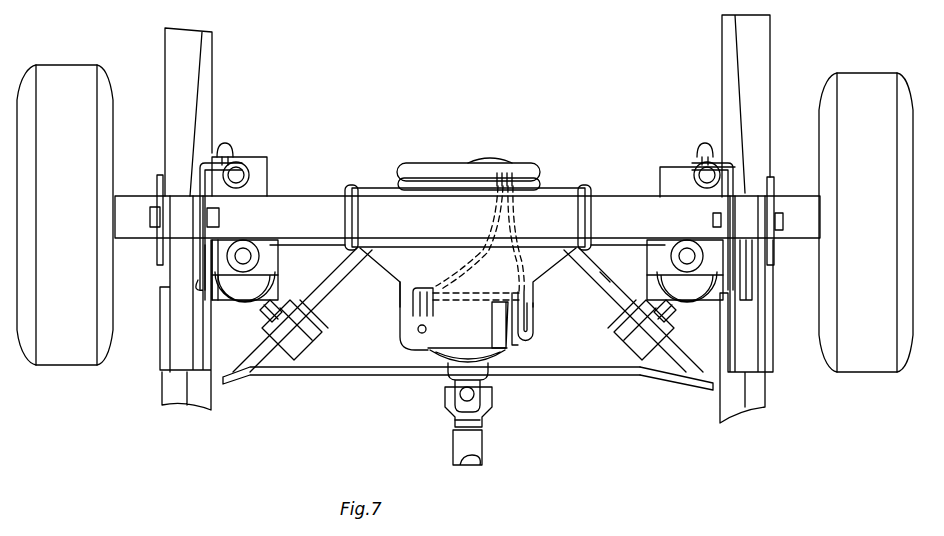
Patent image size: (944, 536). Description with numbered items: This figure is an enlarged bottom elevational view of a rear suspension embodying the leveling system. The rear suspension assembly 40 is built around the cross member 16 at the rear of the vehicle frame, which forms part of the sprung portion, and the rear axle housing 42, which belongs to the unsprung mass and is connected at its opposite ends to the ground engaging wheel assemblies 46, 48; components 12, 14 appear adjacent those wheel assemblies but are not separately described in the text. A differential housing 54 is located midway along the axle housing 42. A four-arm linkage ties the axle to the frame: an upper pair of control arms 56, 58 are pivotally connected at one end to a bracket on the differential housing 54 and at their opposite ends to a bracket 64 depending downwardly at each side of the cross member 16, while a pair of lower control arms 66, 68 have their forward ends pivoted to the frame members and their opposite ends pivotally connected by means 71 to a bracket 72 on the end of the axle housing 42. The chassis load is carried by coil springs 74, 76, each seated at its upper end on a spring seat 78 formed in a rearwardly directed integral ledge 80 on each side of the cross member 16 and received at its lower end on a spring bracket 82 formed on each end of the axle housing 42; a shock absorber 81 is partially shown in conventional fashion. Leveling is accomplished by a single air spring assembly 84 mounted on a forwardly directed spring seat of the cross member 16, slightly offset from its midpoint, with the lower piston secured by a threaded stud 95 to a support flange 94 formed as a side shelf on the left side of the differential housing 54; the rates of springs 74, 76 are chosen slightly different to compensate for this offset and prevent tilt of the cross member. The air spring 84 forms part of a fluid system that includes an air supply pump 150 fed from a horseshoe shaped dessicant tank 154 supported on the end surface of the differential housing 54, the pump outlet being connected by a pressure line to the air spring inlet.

The left wheel hub 12 is at (205, 80).
The right wheel hub 14 is at (736, 70).
The cross member 16 is at (360, 363).
The rear suspension assembly 40 is at (628, 368).
The rear axle housing 42 is at (327, 210).
The wheel assembly 46 is at (76, 82).
The wheel assembly 48 is at (862, 90).
The differential housing 54 is at (532, 263).
The upper control arm 56 is at (375, 273).
The upper control arm 58 is at (615, 290).
The bracket 64 is at (232, 360).
The lower control arm 66 is at (167, 328).
The lower control arm 68 is at (763, 328).
The pivot connecting means 71 is at (220, 217).
The bracket 72 is at (159, 176).
The coil spring 74 is at (227, 278).
The coil spring 76 is at (679, 290).
The spring seat 78 is at (268, 297).
The ledge 80 is at (287, 258).
The shock absorber 81 is at (248, 180).
The spring bracket 82 is at (280, 248).
The air spring assembly 84 is at (418, 362).
The support flange 94 is at (412, 342).
The threaded stud 95 is at (428, 330).
The air supply pump 150 is at (521, 358).
The dessicant tank 154 is at (430, 170).